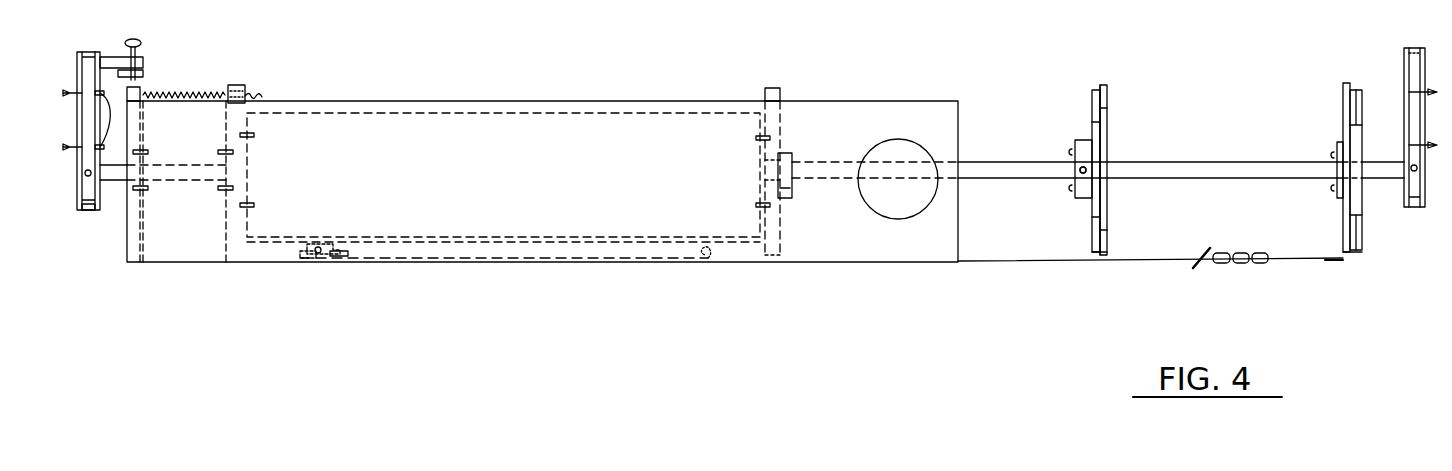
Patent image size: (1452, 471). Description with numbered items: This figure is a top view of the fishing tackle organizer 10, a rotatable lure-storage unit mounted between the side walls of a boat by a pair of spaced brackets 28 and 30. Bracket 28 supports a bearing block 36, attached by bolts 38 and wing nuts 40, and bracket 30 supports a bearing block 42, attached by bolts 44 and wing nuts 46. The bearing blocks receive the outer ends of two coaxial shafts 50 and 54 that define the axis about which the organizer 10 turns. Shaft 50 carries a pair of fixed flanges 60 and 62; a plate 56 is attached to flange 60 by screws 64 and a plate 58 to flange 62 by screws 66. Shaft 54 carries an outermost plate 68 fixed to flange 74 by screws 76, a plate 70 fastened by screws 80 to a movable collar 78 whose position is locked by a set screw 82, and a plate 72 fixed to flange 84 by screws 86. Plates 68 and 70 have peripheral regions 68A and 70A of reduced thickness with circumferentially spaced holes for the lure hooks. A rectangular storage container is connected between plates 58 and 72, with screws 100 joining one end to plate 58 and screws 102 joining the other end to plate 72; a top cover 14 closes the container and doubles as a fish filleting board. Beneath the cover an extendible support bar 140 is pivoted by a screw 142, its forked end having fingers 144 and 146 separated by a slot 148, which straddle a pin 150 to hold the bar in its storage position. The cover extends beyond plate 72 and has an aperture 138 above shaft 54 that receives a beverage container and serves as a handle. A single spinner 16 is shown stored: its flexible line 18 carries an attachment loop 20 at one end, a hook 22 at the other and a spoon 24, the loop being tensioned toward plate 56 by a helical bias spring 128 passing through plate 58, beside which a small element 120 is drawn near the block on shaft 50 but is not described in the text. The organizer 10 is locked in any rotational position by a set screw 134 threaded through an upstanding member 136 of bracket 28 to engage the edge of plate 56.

The fishing tackle organizer 10 is at (1108, 96).
The top cover 14 is at (520, 195).
The spinner 16 is at (1000, 263).
The flexible line 18 is at (1153, 258).
The attachment loop 20 is at (1222, 265).
The hook 22 is at (1340, 265).
The spoon 24 is at (1199, 270).
The bracket 28 is at (92, 136).
The bracket 30 is at (1411, 133).
The bearing block 36 is at (94, 212).
The bolts 38 is at (93, 120).
The wing nuts 40 is at (70, 84).
The bearing block 42 is at (1413, 47).
The bolts 44 is at (1407, 92).
The wing nuts 46 is at (1430, 95).
The shaft 50 is at (112, 186).
The shaft 54 is at (890, 178).
The plate 56 is at (133, 265).
The plate 58 is at (241, 85).
The fixed flange 60 is at (145, 152).
The fixed flange 62 is at (226, 142).
The screws 64 is at (148, 152).
The screws 66 is at (226, 157).
The outermost plate 68 is at (1342, 111).
The peripheral region 68A is at (1350, 265).
The plate 70 is at (1099, 170).
The peripheral region 70A is at (1099, 258).
The plate 72 is at (780, 88).
The fixed flange 74 is at (1337, 148).
The screws 76 is at (1333, 155).
The movable collar 78 is at (1082, 139).
The screws 80 is at (792, 182).
The set screw 82 is at (1079, 172).
The fixed flange 84 is at (792, 196).
The screws 86 is at (792, 160).
The screws 100 is at (253, 136).
The screws 102 is at (754, 140).
The spring hook 120 is at (262, 96).
The helical bias spring 128 is at (196, 91).
The set screw 134 is at (139, 44).
The upstanding member 136 is at (120, 60).
The aperture 138 is at (897, 139).
The extendible support bar 140 is at (548, 260).
The screw 142 is at (705, 259).
The finger 144 is at (322, 249).
The finger 146 is at (316, 256).
The slot 148 is at (345, 256).
The pin 150 is at (305, 256).